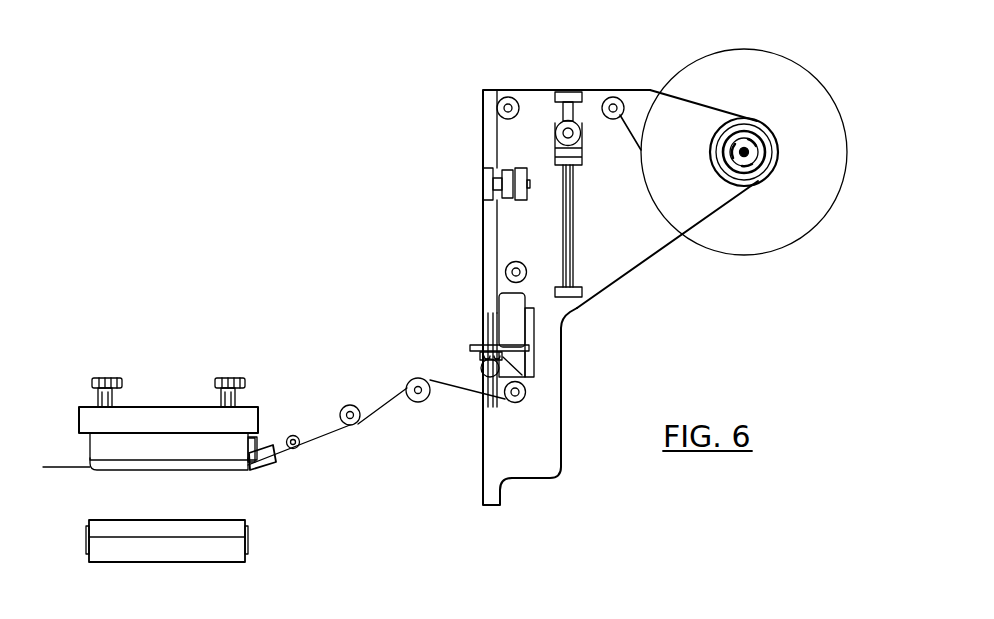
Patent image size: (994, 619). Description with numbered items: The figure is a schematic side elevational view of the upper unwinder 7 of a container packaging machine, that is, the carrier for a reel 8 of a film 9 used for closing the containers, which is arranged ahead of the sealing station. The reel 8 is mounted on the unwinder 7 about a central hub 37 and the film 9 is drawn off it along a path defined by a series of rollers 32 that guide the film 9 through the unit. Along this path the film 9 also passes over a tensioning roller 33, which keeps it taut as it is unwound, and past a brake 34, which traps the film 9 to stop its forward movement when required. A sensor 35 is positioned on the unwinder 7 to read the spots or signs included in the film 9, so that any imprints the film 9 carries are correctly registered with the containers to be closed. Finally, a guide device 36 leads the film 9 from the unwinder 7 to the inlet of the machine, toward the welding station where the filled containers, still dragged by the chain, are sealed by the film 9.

The upper unwinder 7 is at (603, 90).
The reel 8 is at (808, 98).
The film 9 is at (497, 148).
The rollers 32 is at (499, 104).
The tensioning roller 33 is at (560, 128).
The brake 34 is at (483, 185).
The sensor 35 is at (530, 347).
The guide device 36 is at (293, 435).
The hub 37 is at (750, 163).